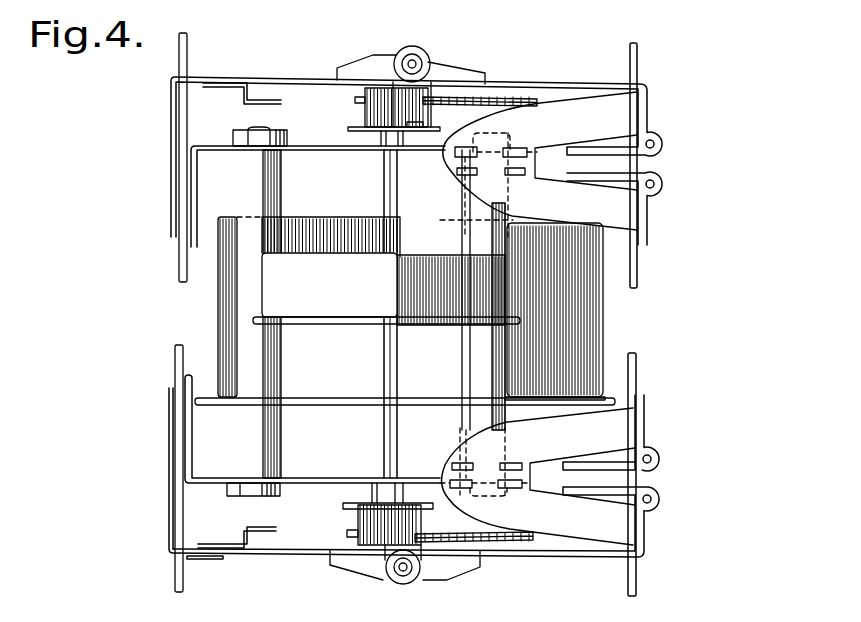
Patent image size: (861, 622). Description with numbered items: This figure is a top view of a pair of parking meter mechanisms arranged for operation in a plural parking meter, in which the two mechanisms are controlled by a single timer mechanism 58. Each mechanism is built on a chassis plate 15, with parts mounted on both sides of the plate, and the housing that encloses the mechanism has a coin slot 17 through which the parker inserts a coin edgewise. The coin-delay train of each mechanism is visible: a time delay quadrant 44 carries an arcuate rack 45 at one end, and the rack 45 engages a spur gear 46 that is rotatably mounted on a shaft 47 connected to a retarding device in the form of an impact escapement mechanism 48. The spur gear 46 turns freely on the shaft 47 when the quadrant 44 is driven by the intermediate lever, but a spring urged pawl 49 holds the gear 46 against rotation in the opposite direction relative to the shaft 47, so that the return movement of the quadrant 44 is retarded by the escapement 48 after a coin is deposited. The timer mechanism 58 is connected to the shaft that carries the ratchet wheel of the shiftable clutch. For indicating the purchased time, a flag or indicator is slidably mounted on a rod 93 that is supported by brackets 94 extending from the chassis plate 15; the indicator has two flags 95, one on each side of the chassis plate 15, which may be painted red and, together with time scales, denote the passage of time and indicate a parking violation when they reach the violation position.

The chassis plate 15 is at (310, 146).
The coin slot 17 is at (650, 165).
The time delay quadrant 44 is at (518, 100).
The arcuate rack 45 is at (490, 98).
The spur gear 46 is at (367, 112).
The shaft 47 is at (392, 438).
The impact escapement mechanism 48 is at (322, 263).
The spring urged pawl 49 is at (425, 126).
The timer mechanism 58 is at (605, 322).
The rod 93 is at (414, 62).
The brackets 94 is at (424, 78).
The flags 95 is at (172, 188).